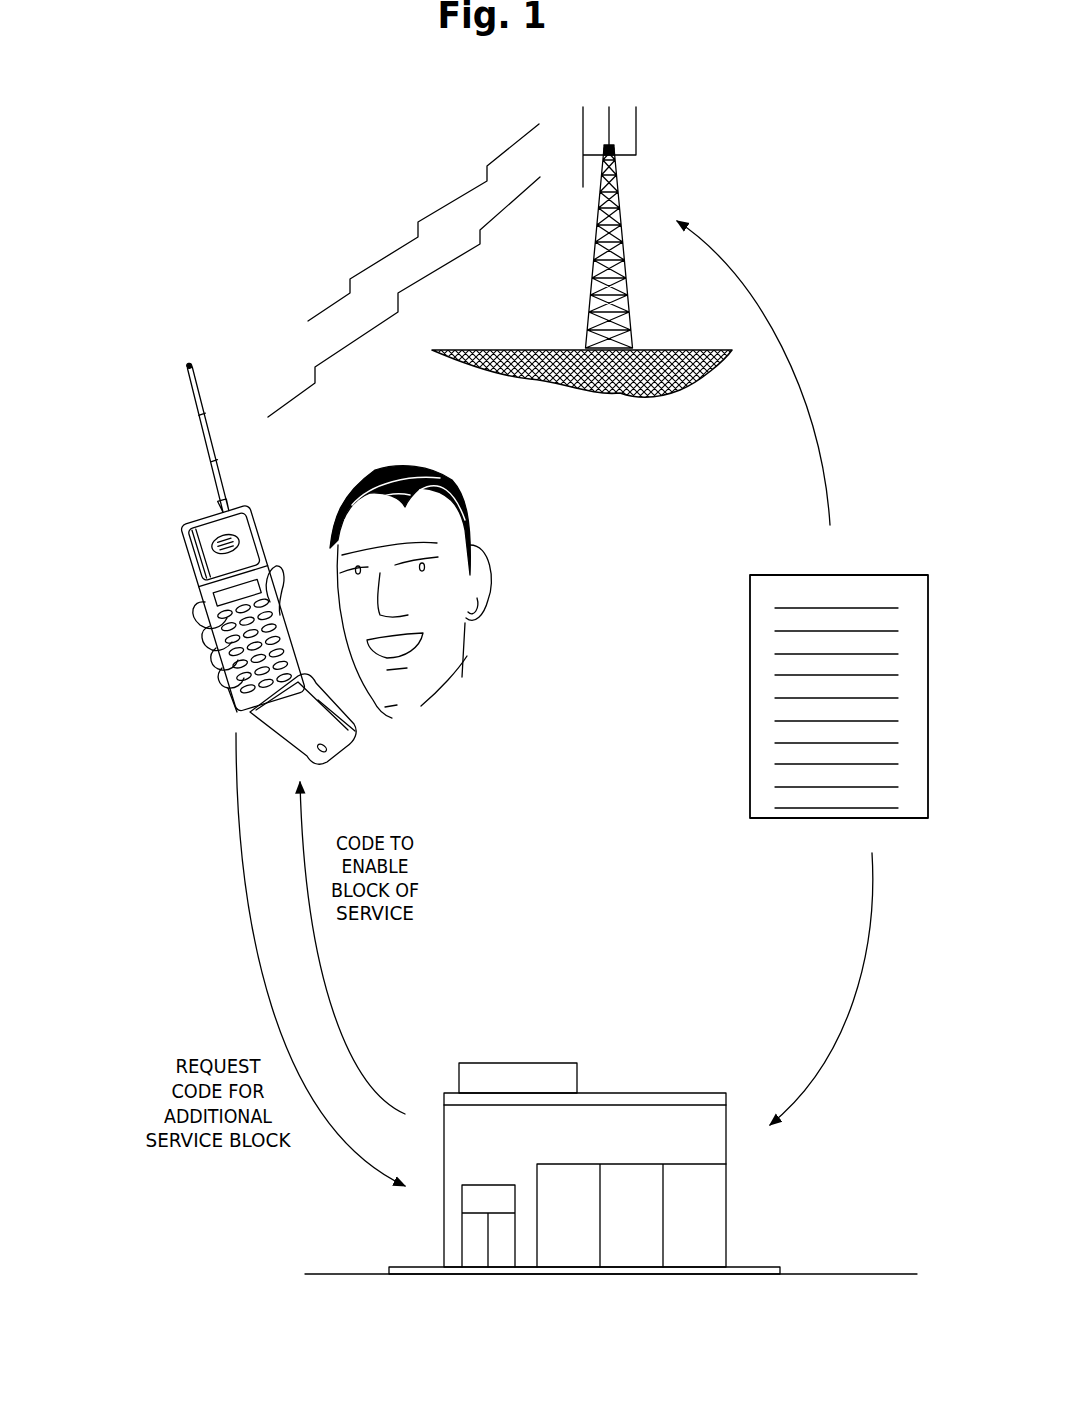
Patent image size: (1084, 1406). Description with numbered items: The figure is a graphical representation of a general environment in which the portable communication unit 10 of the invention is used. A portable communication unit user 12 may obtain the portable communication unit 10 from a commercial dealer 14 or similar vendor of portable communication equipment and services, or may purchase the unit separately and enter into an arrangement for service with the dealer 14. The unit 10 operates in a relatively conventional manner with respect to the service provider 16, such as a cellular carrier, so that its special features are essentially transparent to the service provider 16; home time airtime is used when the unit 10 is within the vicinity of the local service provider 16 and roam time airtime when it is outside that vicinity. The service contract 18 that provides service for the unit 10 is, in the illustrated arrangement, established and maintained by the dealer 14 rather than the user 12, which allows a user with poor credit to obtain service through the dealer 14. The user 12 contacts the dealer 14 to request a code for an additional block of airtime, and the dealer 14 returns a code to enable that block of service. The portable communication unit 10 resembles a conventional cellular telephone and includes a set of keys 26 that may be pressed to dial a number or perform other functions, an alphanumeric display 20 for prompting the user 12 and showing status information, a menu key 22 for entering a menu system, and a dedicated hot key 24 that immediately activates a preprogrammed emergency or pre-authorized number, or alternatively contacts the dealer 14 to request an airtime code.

In FIG. 1, the portable communication unit 10 is at (226, 553).
In FIG. 1, the portable communication unit user 12 is at (503, 527).
The dealer 14 is at (650, 1069).
In FIG. 1, the service provider 16 is at (693, 138).
The service contract 18 is at (730, 678).
In FIG. 1, the alphanumeric display 20 is at (262, 546).
In FIG. 1, the menu key 22 is at (262, 584).
In FIG. 1, the hot key 24 is at (203, 597).
In FIG. 1, the set of keys 26 is at (277, 603).